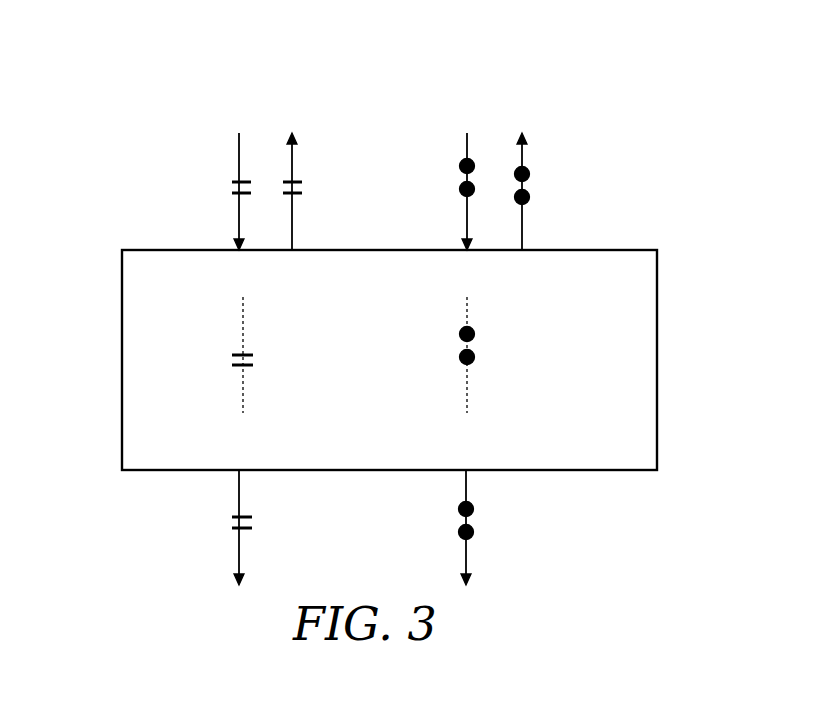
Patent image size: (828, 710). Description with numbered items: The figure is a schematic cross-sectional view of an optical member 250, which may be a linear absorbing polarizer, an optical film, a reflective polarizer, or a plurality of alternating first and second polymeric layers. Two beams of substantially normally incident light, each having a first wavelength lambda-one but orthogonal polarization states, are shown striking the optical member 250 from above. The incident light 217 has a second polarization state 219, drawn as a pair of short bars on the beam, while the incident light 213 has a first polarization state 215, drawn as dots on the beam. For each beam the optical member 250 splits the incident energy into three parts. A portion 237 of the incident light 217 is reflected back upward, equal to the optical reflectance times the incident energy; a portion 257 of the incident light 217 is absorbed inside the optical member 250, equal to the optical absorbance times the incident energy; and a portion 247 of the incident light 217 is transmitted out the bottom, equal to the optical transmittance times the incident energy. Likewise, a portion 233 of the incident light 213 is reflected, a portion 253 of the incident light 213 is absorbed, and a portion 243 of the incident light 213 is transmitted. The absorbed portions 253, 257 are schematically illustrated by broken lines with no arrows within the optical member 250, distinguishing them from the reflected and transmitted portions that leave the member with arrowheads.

The optical member 250 is at (122, 328).
The incident light 217 is at (239, 148).
The second polarization state 219 is at (237, 192).
The reflected portion 237 is at (292, 152).
The incident light 213 is at (467, 150).
The reflected portion 233 is at (522, 152).
The first polarization state 215 is at (530, 197).
The absorbed portion 257 is at (243, 394).
The absorbed portion 253 is at (467, 392).
The transmitted portion 247 is at (239, 548).
The transmitted portion 243 is at (467, 557).